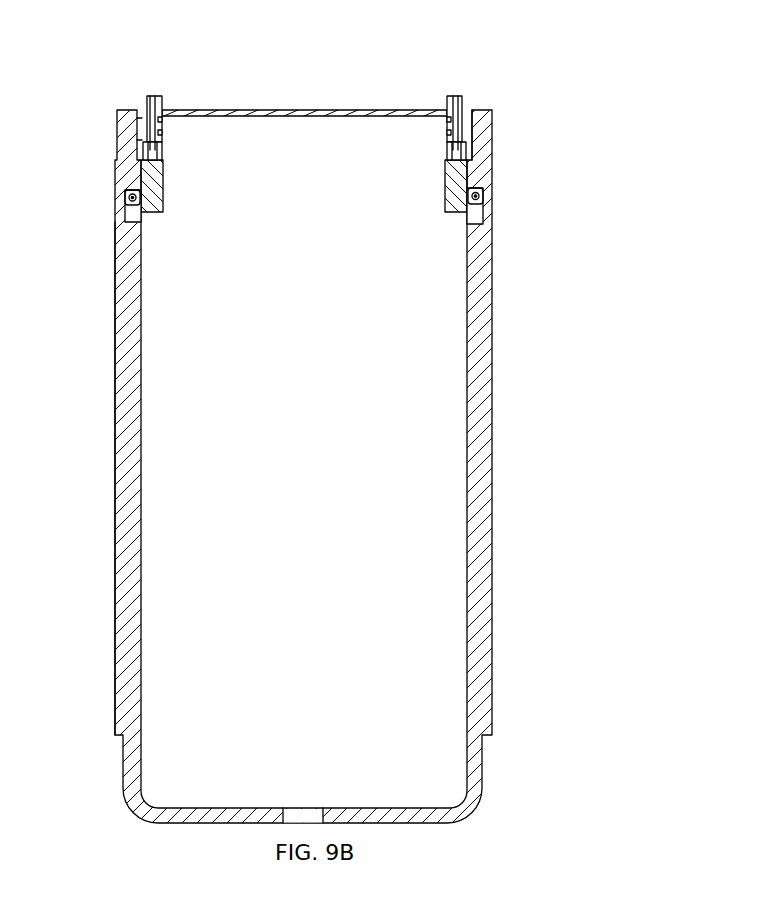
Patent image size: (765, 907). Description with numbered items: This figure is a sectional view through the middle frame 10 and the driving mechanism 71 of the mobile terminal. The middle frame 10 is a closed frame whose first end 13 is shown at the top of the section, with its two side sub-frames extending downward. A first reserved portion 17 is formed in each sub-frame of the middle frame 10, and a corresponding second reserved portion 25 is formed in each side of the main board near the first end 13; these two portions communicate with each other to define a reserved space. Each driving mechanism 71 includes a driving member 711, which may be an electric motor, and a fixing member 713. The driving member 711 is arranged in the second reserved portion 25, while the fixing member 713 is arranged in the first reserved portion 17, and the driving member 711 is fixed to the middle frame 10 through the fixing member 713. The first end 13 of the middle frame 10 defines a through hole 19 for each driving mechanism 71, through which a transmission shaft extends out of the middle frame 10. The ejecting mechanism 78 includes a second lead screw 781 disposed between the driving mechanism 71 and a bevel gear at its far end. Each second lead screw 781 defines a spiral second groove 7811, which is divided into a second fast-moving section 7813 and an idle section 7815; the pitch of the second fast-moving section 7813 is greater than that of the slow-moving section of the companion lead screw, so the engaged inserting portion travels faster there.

The middle frame 10 is at (480, 402).
The first end 13 is at (270, 110).
The first reserved portion 17 is at (115, 228).
The through hole 19 is at (468, 118).
The second reserved portion 25 is at (143, 127).
The driving mechanism 71 is at (462, 203).
The driving member 711 is at (147, 178).
The fixing member 713 is at (125, 198).
The ejecting mechanism 78 is at (151, 95).
The second lead screw 781 is at (148, 100).
The second groove 7811 is at (379, 108).
The second fast-moving section 7813 is at (447, 150).
The idle section 7815 is at (452, 110).